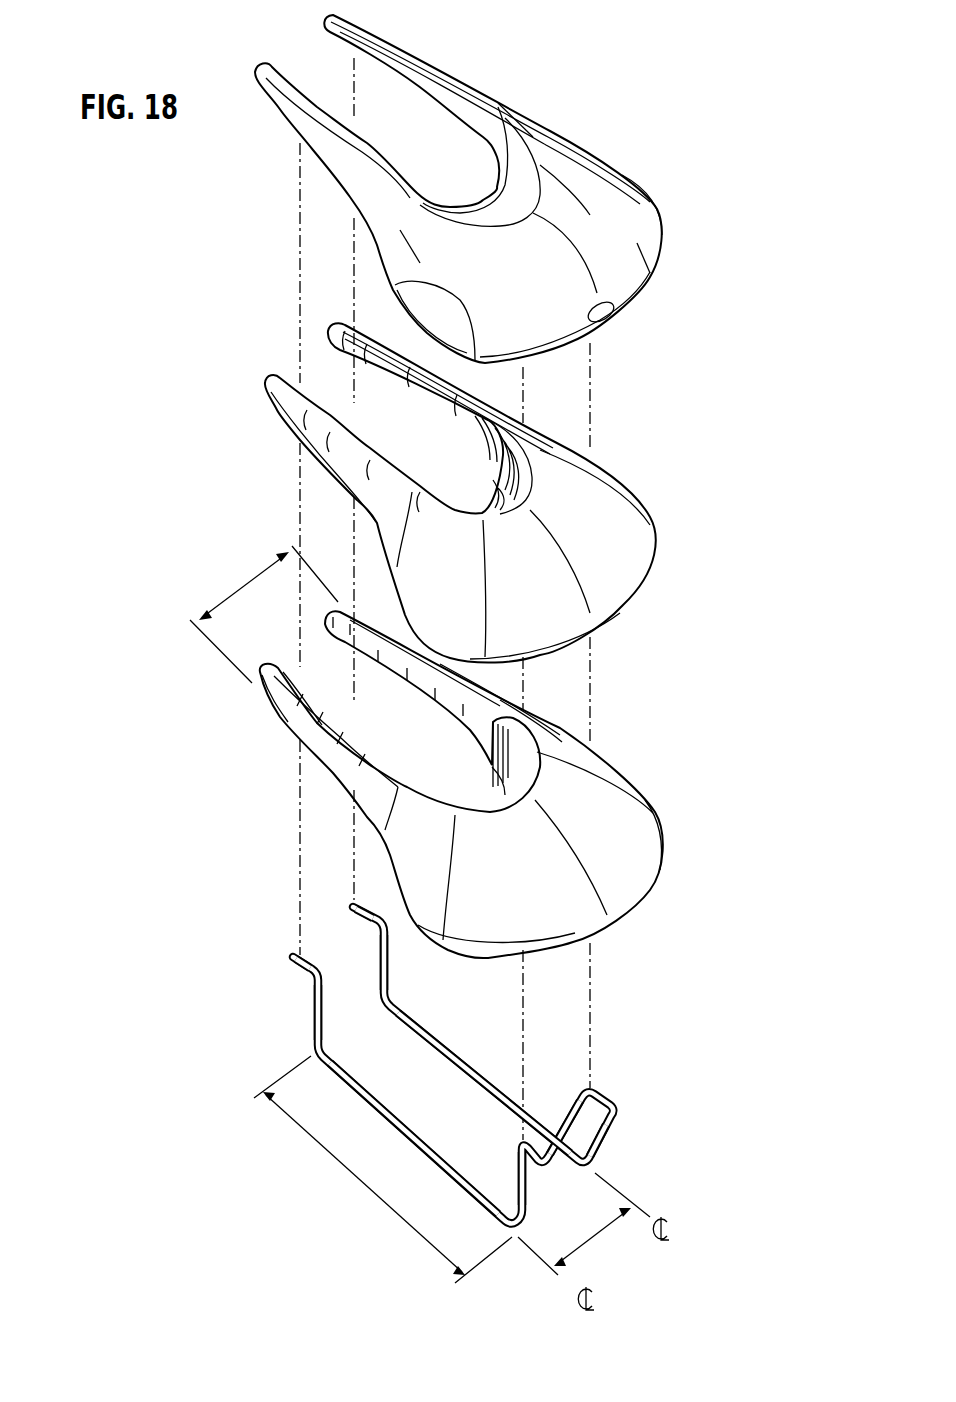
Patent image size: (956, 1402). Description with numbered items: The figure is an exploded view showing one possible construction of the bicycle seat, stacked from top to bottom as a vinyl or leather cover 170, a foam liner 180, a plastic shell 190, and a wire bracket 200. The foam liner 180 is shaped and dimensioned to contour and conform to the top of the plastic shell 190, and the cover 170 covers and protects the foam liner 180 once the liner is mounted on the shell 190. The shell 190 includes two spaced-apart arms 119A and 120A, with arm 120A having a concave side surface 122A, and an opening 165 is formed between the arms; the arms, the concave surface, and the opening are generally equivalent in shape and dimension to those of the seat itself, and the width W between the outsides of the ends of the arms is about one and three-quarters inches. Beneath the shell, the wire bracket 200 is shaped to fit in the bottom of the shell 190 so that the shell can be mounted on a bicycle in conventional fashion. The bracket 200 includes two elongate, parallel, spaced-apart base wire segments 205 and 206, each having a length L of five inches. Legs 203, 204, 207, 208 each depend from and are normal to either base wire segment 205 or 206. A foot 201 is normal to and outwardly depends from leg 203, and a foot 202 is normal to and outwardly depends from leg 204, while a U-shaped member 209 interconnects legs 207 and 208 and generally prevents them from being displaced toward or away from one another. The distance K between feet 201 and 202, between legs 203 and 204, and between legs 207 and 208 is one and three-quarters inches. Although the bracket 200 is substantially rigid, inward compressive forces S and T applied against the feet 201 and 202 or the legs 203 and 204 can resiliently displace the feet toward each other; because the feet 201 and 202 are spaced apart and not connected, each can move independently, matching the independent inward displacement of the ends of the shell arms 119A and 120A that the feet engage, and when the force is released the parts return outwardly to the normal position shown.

The cover 170 is at (660, 281).
The foam liner 180 is at (659, 556).
The plastic shell 190 is at (674, 862).
The arm 119A is at (485, 686).
The opening 165 is at (424, 756).
The arm 120A is at (272, 714).
The concave side surface 122A is at (318, 743).
The wire bracket 200 is at (634, 1105).
The foot 201 is at (291, 959).
The foot 202 is at (362, 920).
The leg 203 is at (315, 1026).
The leg 204 is at (389, 972).
The base wire segment 205 is at (408, 1126).
The base wire segment 206 is at (449, 1053).
The leg 207 is at (516, 1184).
The leg 208 is at (592, 1142).
The U-shaped member 209 is at (571, 1135).
The width between outsides of arm ends W is at (236, 593).
The length of base wire segment L is at (355, 1174).
The distance between feet and legs K is at (586, 1247).
The inward compressive displacement force S is at (296, 976).
The inward compressive displacement force T is at (395, 902).